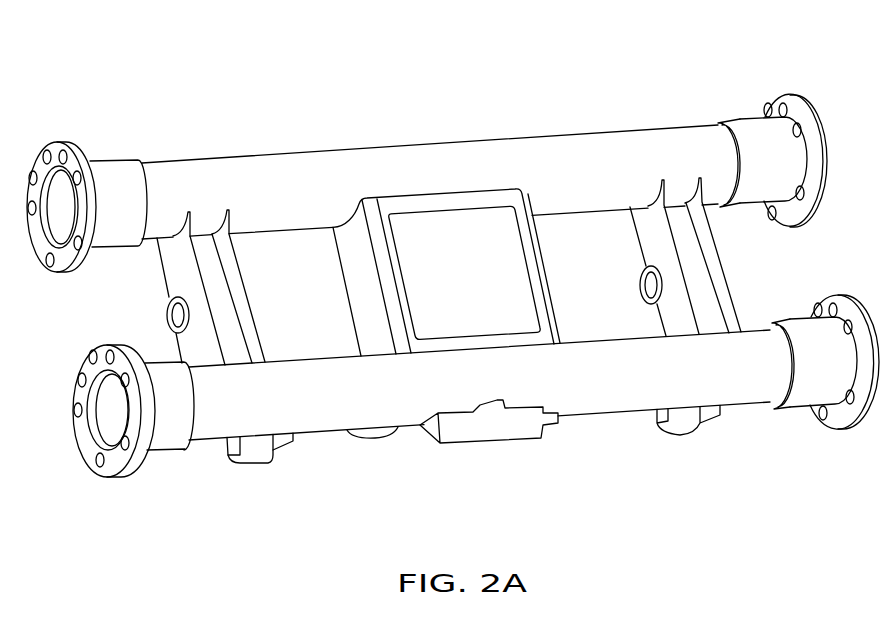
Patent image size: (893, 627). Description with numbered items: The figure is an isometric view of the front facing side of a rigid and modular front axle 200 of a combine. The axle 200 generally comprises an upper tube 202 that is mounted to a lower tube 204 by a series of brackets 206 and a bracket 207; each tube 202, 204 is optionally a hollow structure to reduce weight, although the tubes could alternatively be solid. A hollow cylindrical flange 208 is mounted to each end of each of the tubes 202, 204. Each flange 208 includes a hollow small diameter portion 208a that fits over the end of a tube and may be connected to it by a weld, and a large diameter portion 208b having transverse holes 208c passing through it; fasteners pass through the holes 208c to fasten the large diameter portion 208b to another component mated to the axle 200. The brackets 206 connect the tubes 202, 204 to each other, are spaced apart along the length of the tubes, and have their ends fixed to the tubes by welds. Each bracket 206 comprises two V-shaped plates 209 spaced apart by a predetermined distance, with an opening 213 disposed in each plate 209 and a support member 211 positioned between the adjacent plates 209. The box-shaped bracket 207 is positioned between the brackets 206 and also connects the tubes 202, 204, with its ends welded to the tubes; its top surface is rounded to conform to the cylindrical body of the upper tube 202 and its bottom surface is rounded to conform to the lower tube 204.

The axle 200 is at (352, 84).
The upper tube 202 is at (575, 152).
The lower tube 204 is at (613, 400).
The brackets 206 is at (230, 252).
The bracket 207 is at (527, 243).
The flange 208 is at (113, 463).
The small diameter portion 208a is at (747, 133).
The large diameter portion 208b is at (807, 120).
The transverse holes 208c is at (778, 103).
The V-shaped plates 209 is at (703, 249).
The support member 211 is at (698, 282).
The opening 213 is at (173, 317).